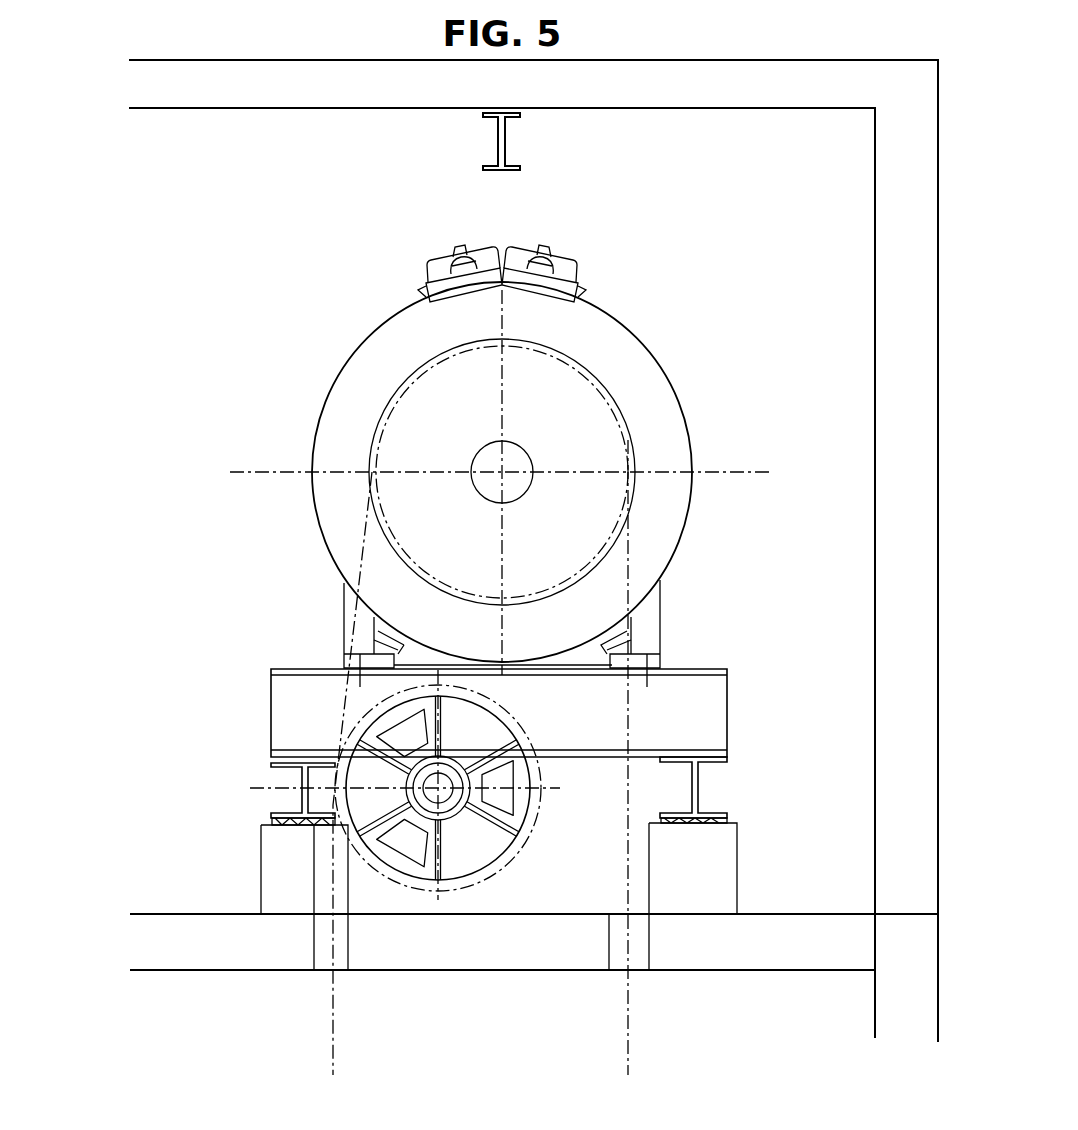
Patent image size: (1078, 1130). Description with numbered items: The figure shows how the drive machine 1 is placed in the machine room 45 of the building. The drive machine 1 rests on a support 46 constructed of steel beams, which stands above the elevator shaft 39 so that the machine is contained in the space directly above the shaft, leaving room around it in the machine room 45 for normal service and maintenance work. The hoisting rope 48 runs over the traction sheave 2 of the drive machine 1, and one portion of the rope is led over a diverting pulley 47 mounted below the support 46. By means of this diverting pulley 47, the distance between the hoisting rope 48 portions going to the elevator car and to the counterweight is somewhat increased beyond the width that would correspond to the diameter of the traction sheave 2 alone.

The drive machine 1 is at (357, 373).
The traction sheave 2 is at (386, 443).
The elevator shaft 39 is at (713, 1101).
The machine room 45 is at (713, 252).
The support 46 is at (300, 710).
The diverting pulley 47 is at (303, 786).
The hoisting rope 48 is at (331, 1003).